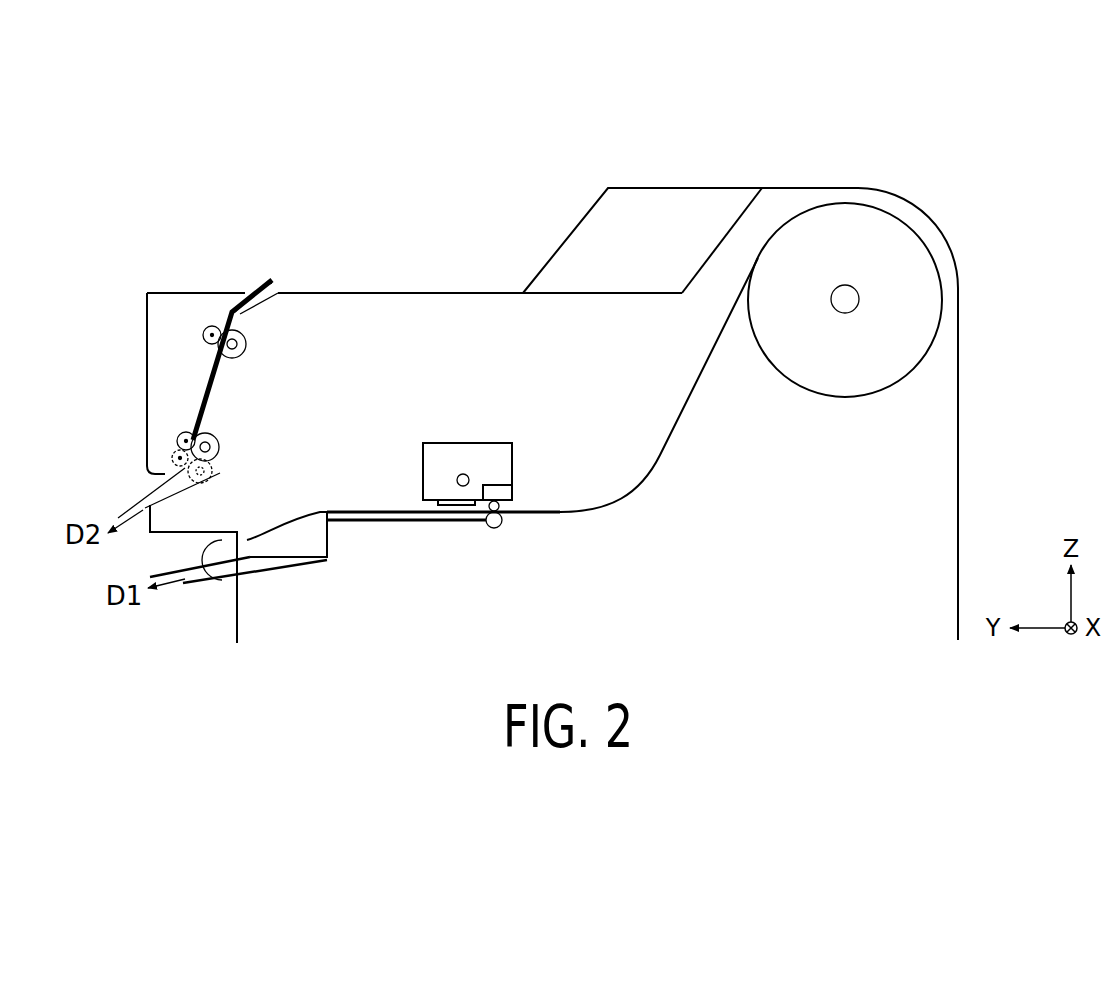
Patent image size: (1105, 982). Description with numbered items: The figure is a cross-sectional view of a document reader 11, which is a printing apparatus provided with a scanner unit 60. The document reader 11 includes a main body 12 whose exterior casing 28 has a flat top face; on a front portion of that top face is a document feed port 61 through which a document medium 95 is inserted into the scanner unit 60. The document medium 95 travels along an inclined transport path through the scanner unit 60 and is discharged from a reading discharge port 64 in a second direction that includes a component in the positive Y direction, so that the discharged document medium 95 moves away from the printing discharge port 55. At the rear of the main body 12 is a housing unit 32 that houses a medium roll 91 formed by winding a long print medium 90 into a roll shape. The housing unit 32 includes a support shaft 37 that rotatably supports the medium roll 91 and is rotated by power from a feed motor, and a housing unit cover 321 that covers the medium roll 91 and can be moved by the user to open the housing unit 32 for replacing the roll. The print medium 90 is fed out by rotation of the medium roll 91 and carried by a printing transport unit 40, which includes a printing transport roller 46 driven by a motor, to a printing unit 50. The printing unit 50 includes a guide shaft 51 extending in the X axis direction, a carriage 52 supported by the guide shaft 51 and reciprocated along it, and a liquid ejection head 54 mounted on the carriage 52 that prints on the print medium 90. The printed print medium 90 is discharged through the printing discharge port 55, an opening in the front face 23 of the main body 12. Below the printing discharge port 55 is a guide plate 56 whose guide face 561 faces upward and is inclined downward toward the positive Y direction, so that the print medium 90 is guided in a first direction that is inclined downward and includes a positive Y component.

The document reader 11 is at (277, 85).
The main body 12 is at (382, 162).
The front face 23 is at (237, 615).
The exterior casing 28 is at (393, 293).
The housing unit 32 is at (913, 188).
The housing unit cover 321 is at (830, 186).
The support shaft 37 is at (847, 299).
The printing transport unit 40 is at (575, 532).
The printing transport roller 46 is at (495, 530).
The printing unit 50 is at (393, 375).
The guide shaft 51 is at (466, 474).
The carriage 52 is at (447, 450).
The liquid ejection head 54 is at (470, 508).
The printing discharge port 55 is at (177, 550).
The guide plate 56 is at (220, 565).
The guide face 561 is at (205, 565).
The scanner unit 60 is at (160, 278).
The document feed port 61 is at (268, 283).
The reading discharge port 64 is at (140, 488).
The print medium 90 is at (688, 392).
The medium roll 91 is at (830, 377).
The document medium 95 is at (255, 292).